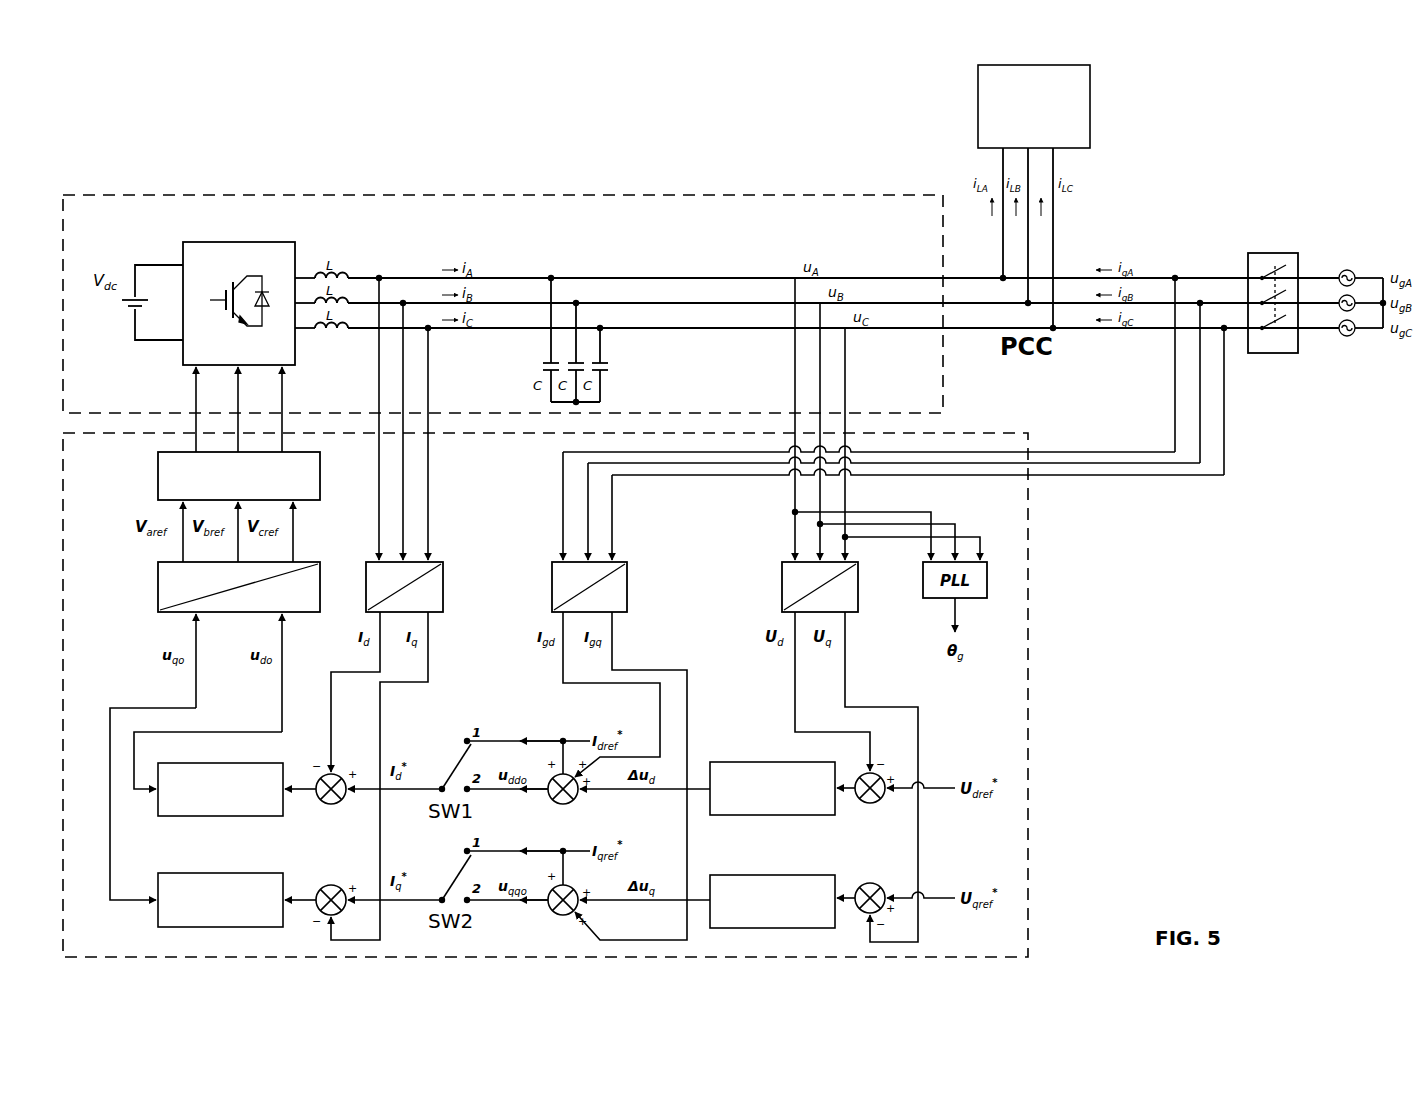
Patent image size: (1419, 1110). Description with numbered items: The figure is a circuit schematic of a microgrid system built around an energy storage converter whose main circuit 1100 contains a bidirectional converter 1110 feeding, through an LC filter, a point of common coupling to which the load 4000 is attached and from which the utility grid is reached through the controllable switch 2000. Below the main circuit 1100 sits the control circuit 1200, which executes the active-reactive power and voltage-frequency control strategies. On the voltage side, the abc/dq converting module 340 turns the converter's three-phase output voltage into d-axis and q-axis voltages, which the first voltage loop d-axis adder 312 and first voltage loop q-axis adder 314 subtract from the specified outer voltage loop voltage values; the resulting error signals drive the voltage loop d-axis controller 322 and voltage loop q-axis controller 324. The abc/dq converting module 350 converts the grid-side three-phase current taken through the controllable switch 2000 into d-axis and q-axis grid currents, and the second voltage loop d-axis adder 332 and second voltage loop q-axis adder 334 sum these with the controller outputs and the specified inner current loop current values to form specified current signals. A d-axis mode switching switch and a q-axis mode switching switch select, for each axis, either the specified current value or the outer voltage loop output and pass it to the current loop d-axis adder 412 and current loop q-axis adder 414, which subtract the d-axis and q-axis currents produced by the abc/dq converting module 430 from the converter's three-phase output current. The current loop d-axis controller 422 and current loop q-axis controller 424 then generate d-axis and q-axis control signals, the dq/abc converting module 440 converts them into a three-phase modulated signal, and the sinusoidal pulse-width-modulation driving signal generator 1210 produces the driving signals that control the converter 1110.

The main circuit 1100 is at (250, 195).
The converter 1110 is at (255, 242).
The control circuit 1200 is at (1030, 700).
The driving signal generator 1210 is at (158, 477).
The two-phase rotary coordinate system to three-phase static coordinate system conve 440 is at (158, 584).
The first three-phase static coordinate system to two-phase rotary coordinate system 430 is at (445, 578).
The third three-phase static coordinate system to two-phase rotary coordinate system 350 is at (622, 575).
The second three-phase static coordinate system to two-phase rotary coordinate syste 340 is at (782, 584).
The load 4000 is at (1090, 110).
The controllable switch 2000 is at (1268, 253).
The current loop d-axis controller 422 is at (216, 816).
The current loop q-axis controller 424 is at (205, 927).
The current loop d-axis adder 412 is at (331, 804).
The current loop q-axis adder 414 is at (340, 878).
The second voltage loop d-axis adder 332 is at (565, 804).
The second voltage loop q-axis adder 334 is at (554, 915).
The voltage loop d-axis controller 322 is at (775, 815).
The voltage loop q-axis controller 324 is at (772, 875).
The first voltage loop d-axis adder 312 is at (870, 803).
The first voltage loop q-axis adder 314 is at (876, 872).